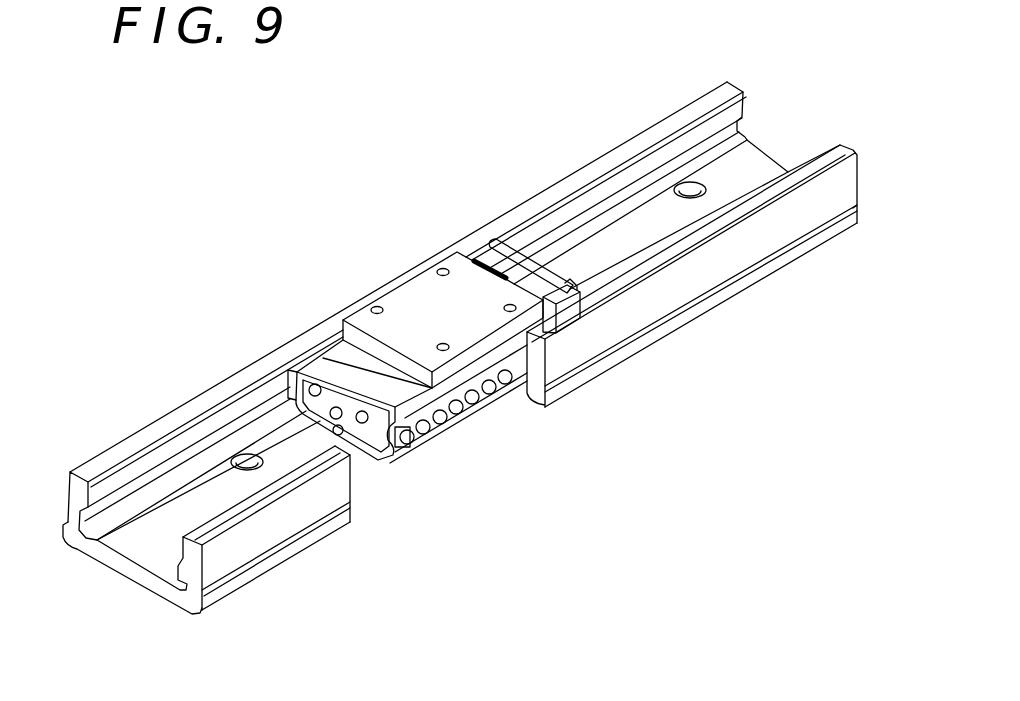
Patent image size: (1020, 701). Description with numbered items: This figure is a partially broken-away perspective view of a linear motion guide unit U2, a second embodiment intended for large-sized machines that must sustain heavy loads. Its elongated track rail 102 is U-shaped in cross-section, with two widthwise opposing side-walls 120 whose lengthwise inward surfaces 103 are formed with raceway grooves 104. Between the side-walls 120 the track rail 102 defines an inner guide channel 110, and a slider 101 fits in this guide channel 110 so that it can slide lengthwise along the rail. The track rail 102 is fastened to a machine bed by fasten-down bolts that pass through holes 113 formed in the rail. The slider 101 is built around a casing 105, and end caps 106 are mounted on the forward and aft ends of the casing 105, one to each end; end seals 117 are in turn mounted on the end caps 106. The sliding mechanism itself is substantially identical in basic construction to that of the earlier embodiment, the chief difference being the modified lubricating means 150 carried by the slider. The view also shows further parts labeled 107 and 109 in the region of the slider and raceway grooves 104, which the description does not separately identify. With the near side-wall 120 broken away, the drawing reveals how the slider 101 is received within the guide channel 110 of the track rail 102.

The linear motion guide unit U2 is at (357, 258).
The slider 101 is at (423, 282).
The track rail 102 is at (113, 563).
The lengthwise inward surfaces 103 is at (708, 107).
The raceway grooves 104 is at (743, 133).
The casing 105 is at (457, 414).
The end caps 106 is at (337, 357).
The ball retainer 107 is at (483, 400).
The raceway groove 109 is at (528, 385).
The guide channel 110 is at (757, 173).
The holes 113 is at (688, 183).
The end seals 117 is at (502, 268).
The side-walls 120 is at (113, 453).
The lubricating means 150 is at (414, 451).